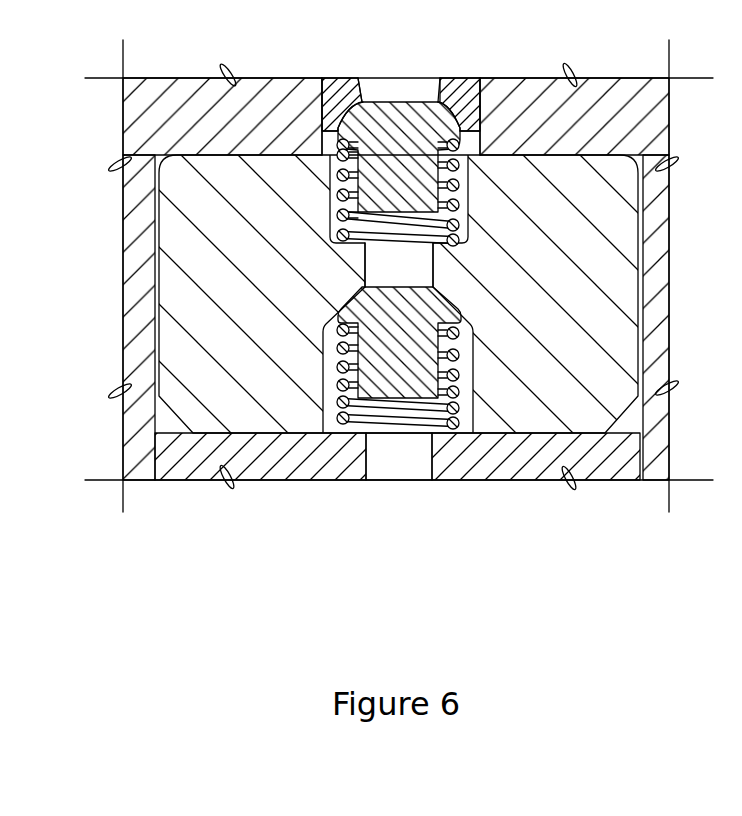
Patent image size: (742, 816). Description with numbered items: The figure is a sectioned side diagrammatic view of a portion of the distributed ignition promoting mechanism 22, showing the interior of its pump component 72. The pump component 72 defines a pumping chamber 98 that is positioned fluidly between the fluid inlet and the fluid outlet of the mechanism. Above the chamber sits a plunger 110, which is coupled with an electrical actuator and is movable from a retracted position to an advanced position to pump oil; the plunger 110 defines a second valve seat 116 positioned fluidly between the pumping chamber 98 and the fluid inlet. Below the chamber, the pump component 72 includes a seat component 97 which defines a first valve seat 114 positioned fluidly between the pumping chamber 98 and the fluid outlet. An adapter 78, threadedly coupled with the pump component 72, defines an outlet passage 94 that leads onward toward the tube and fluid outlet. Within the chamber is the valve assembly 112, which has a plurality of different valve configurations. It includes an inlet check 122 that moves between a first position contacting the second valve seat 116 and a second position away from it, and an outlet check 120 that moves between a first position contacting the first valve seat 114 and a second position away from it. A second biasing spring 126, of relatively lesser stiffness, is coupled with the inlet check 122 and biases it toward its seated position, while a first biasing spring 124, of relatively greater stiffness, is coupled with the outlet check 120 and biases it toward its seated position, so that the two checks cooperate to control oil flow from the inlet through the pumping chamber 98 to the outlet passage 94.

The distributed ignition promoting mechanism 22 is at (307, 315).
The pump component 72 is at (170, 88).
The adapter 78 is at (285, 470).
The outlet passage 94 is at (430, 460).
The seat component 97 is at (622, 293).
The pumping chamber 98 is at (414, 268).
The plunger 110 is at (465, 87).
The valve assembly 112 is at (388, 217).
The first valve seat 114 is at (456, 308).
The second valve seat 116 is at (355, 118).
The outlet check 120 is at (430, 356).
The inlet check 122 is at (432, 173).
The first biasing spring 124 is at (466, 410).
The second biasing spring 126 is at (343, 172).